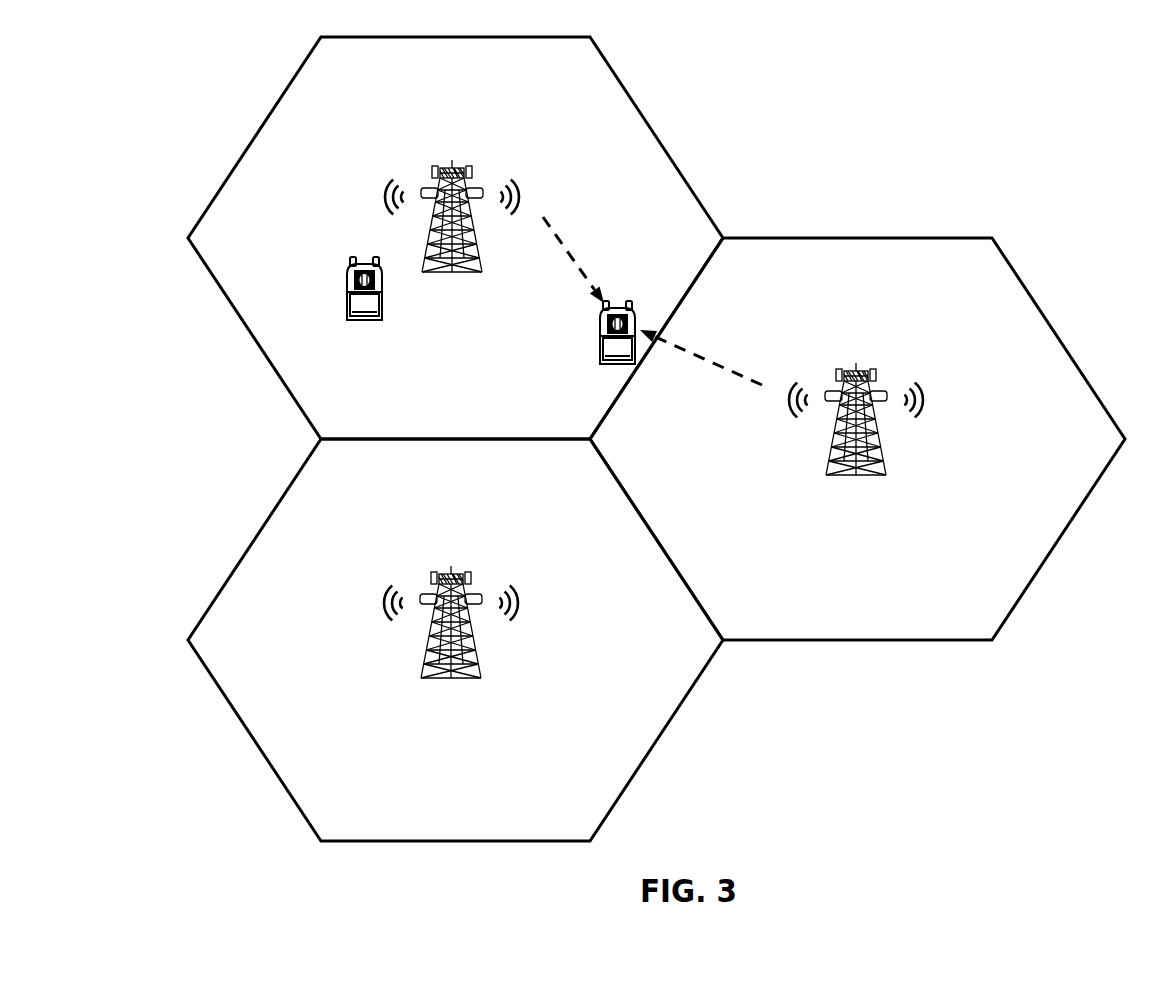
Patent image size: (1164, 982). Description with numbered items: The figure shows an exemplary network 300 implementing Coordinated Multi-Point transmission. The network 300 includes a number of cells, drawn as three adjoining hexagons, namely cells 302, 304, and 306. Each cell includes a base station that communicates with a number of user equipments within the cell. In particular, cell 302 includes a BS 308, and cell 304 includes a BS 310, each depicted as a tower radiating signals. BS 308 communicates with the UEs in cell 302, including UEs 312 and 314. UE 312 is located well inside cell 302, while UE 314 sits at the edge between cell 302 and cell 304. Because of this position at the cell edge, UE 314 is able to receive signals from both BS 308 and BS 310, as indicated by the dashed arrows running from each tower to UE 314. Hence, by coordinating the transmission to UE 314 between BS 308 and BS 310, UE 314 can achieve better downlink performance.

The network 300 is at (660, 439).
The cell 302 is at (638, 108).
The cell 304 is at (1055, 332).
The cell 306 is at (258, 747).
The base station 308 is at (463, 281).
The base station 310 is at (868, 478).
The UE 312 is at (347, 292).
The UE 314 is at (598, 363).